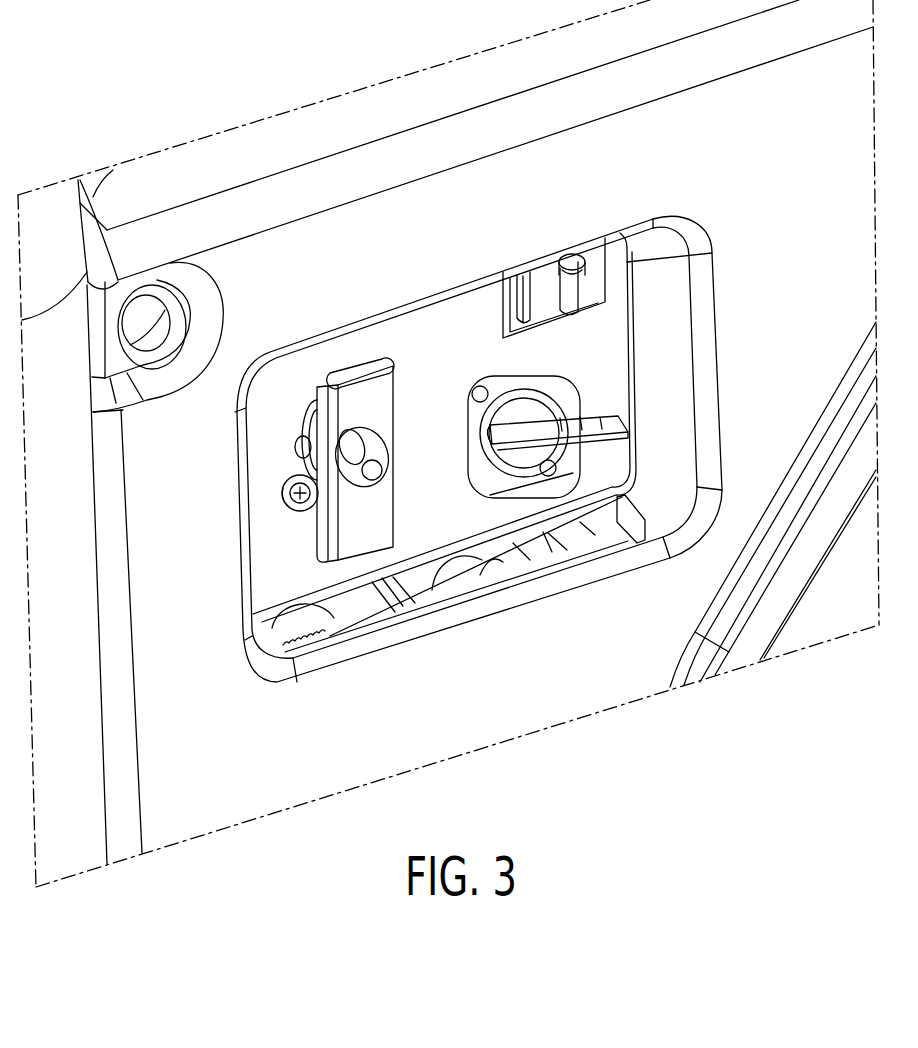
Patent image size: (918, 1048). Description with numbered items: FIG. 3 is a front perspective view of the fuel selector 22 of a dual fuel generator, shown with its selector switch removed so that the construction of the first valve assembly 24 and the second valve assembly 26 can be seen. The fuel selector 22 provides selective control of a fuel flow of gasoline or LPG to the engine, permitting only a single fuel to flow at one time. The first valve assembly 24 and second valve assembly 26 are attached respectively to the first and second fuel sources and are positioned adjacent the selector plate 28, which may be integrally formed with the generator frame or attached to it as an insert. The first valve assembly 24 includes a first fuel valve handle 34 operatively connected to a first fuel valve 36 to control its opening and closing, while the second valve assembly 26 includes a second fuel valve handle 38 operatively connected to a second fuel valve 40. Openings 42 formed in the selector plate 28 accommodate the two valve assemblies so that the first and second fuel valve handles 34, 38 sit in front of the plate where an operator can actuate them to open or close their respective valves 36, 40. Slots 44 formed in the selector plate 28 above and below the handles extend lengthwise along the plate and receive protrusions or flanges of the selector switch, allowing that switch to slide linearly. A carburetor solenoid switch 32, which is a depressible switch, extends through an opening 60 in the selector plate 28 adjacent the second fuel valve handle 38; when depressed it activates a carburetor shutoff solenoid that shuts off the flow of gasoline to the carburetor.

The fuel selector 22 is at (740, 174).
The first valve assembly 24 is at (278, 548).
The second valve assembly 26 is at (578, 362).
The selector plate 28 is at (437, 376).
The carburetor solenoid switch 32 is at (567, 288).
The first fuel valve handle 34 is at (377, 517).
The first fuel valve 36 is at (295, 465).
The second fuel valve handle 38 is at (596, 415).
The second fuel valve 40 is at (489, 472).
The openings 42 is at (290, 408).
The slots 44 is at (399, 332).
The opening 60 is at (501, 293).